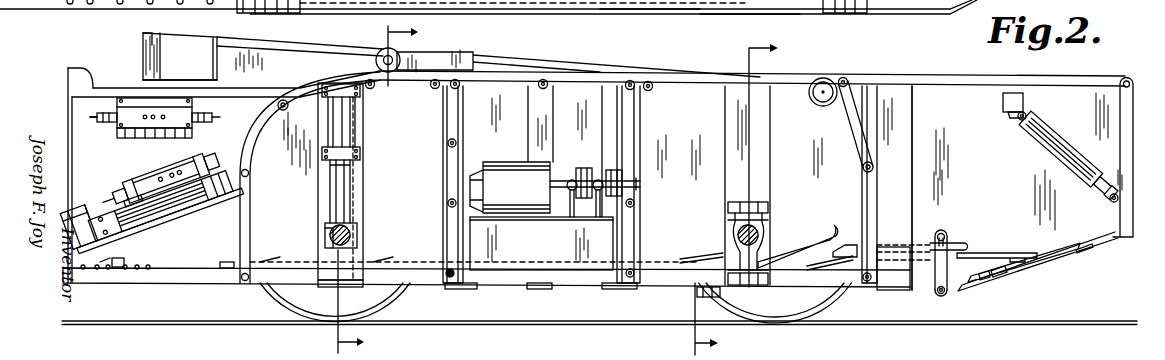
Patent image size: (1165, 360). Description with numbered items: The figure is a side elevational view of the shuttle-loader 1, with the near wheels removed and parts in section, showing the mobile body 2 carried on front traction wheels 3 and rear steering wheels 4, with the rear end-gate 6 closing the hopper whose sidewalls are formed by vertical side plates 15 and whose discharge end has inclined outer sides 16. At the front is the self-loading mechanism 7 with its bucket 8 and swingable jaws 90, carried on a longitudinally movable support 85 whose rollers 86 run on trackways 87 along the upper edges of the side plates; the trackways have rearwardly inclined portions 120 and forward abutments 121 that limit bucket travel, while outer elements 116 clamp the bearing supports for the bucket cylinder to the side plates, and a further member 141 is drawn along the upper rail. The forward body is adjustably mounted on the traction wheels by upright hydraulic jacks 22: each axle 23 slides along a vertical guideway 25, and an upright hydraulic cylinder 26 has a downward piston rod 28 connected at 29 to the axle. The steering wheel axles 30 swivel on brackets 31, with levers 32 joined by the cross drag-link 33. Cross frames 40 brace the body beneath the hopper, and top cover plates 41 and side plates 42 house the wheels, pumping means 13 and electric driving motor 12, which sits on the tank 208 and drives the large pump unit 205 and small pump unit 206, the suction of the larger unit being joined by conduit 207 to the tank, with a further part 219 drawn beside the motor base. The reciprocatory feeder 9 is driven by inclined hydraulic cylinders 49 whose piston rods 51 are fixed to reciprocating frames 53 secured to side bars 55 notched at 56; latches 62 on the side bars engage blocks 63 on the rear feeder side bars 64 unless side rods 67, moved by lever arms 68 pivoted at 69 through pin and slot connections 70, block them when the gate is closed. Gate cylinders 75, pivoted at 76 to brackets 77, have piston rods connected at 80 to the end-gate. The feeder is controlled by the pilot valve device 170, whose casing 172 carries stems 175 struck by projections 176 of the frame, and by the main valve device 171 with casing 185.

The shuttle-loader 1 is at (913, 72).
The mobile body 2 is at (703, 84).
The front traction wheels 3 is at (317, 298).
The rear steering wheels 4 is at (795, 297).
The rear end-gate 6 is at (1128, 150).
The self-loading mechanism 7 is at (67, 93).
The bucket 8 is at (178, 48).
The reciprocatory conveyor or feeder 9 is at (997, 277).
The electric driving motor 12 is at (533, 190).
The pumping means 13 is at (622, 180).
The vertical side plates 15 is at (952, 95).
The tapered or inclined outer sides 16 is at (1062, 253).
The upright hydraulic jacks 22 is at (332, 114).
The axles 23 is at (358, 232).
The vertical guideways 25 is at (365, 177).
The upright hydraulic cylinders 26 is at (345, 123).
The piston rods 28 is at (340, 196).
The connection of piston rods to axles 29 is at (325, 237).
The steering wheel axles 30 is at (738, 237).
The brackets 31 is at (762, 205).
The levers 32 is at (738, 287).
The adjustable cross drag-link 33 is at (698, 294).
The cross frames or transverse braces 40 is at (463, 289).
The top cover plates 41 is at (648, 1).
The side plates 42 is at (713, 13).
The hydraulic cylinders 49 is at (200, 222).
The piston rods 51 is at (118, 271).
The reciprocating frames 53 is at (91, 230).
The side bars 55 is at (228, 268).
The notches 56 is at (118, 258).
The resilient dogs or latches 62 is at (818, 248).
The blocks 63 is at (852, 246).
The side bars of rearward feeder section 64 is at (982, 256).
The side rods 67 is at (928, 249).
The lever arms 68 is at (951, 278).
The pivot of lever arms 69 is at (941, 294).
The pin and slot connections 70 is at (944, 240).
The hydraulic cylinders 75 is at (1062, 142).
The upper pivot of gate cylinder 76 is at (1020, 121).
The bracket 77 is at (1004, 101).
The pivotal connection of piston rods to end-gate 80 is at (1112, 201).
The longitudinally movable support 85 is at (327, 38).
The rollers 86 is at (396, 56).
The trackways 87 is at (182, 86).
The swingable digging and gathering jaws 90 is at (147, 40).
The outer elements 116 is at (825, 86).
The inclined trackway portions 120 is at (293, 82).
The abutments or stops 121 is at (98, 60).
The rod 141 is at (517, 67).
The automatic pilot valve device 170 is at (133, 180).
The main conveyor valve device 171 is at (117, 107).
The valve casing 172 is at (166, 173).
The valve stems 175 is at (128, 203).
The projections 176 is at (204, 180).
The valve casing 185 is at (133, 108).
The large capacity pump unit 205 is at (582, 169).
The small capacity pump unit 206 is at (618, 169).
The conduit 207 is at (558, 280).
The liquid reservoir or tank 208 is at (538, 289).
The bracket 219 is at (603, 211).